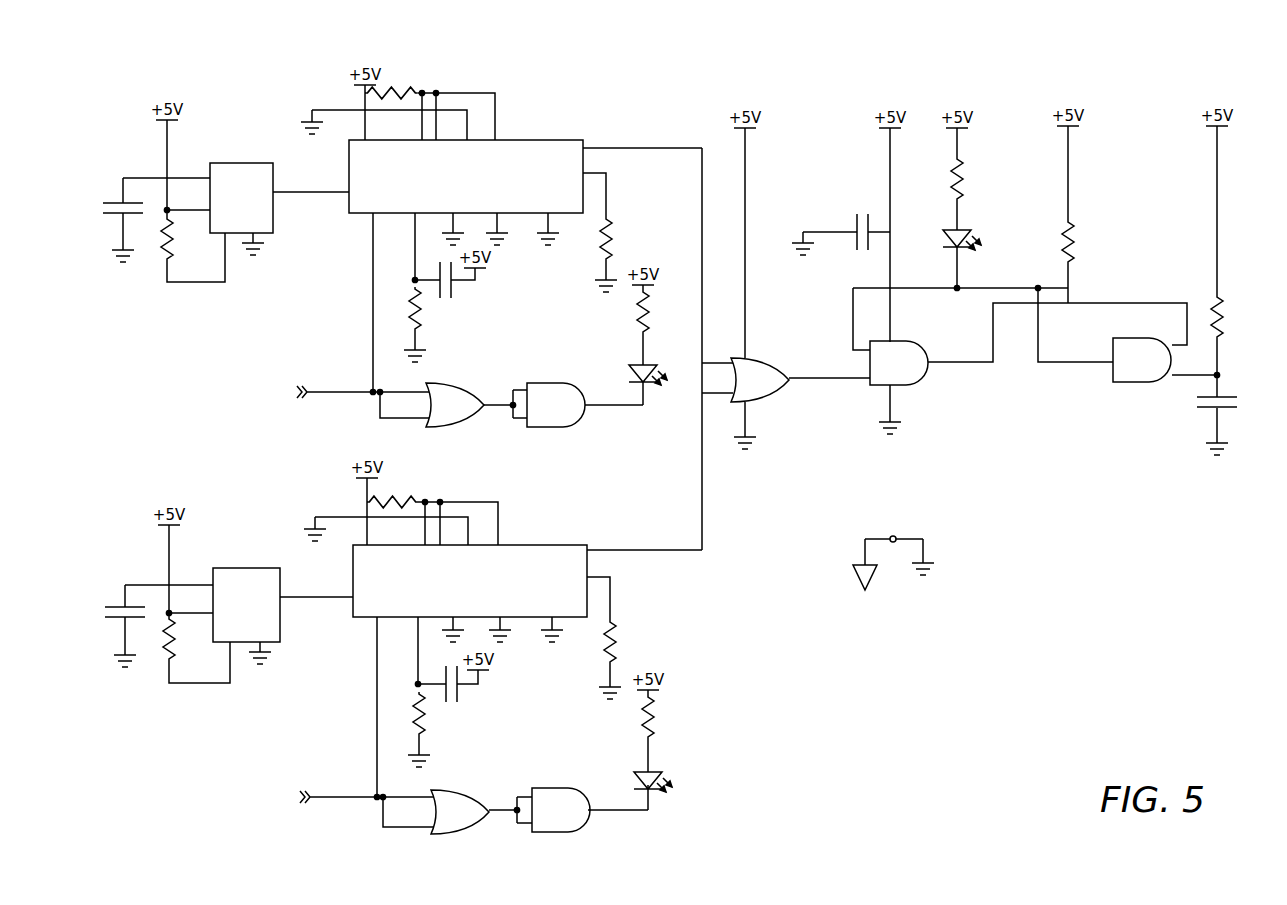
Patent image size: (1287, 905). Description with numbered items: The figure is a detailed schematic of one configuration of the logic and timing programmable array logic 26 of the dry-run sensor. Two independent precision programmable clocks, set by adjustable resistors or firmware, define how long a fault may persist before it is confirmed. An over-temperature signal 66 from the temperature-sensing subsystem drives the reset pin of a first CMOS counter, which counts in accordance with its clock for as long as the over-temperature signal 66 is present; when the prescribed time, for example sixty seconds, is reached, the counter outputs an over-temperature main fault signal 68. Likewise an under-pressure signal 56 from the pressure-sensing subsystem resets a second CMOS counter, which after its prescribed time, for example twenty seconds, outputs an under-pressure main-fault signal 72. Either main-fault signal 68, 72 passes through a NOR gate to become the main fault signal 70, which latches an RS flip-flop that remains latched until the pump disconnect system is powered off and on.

The logic and timing programmable array logic (PAL) 26 is at (687, 456).
The under-pressure signal 56 is at (354, 775).
The over-temperature signal 66 is at (349, 366).
The over-temperature main fault signal 68 is at (642, 121).
The main fault signal 70 is at (960, 268).
The under-pressure main-fault signal 72 is at (675, 365).